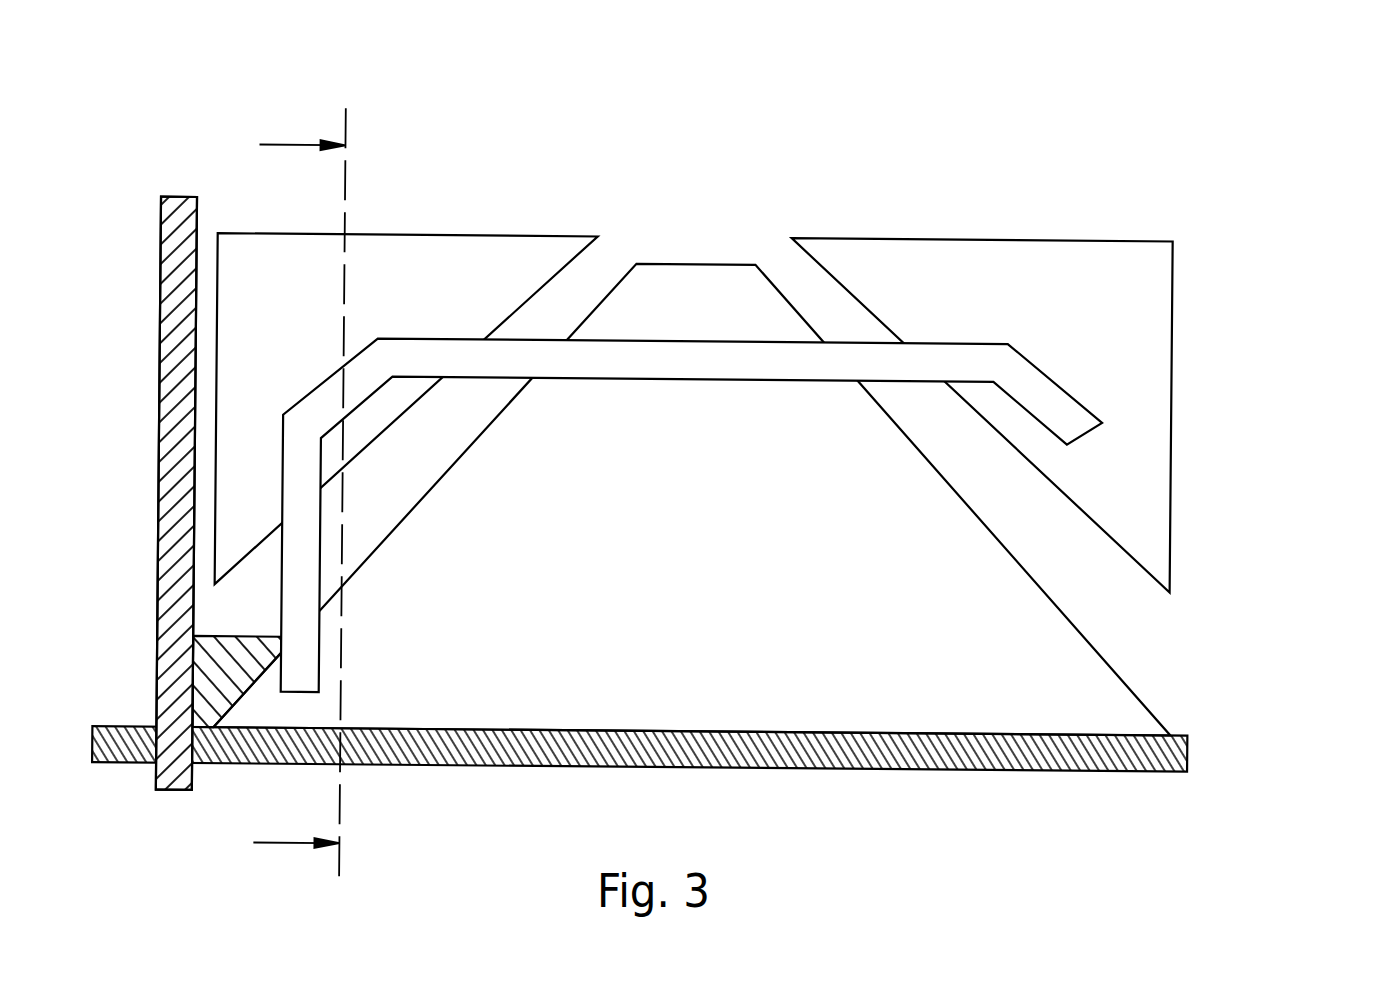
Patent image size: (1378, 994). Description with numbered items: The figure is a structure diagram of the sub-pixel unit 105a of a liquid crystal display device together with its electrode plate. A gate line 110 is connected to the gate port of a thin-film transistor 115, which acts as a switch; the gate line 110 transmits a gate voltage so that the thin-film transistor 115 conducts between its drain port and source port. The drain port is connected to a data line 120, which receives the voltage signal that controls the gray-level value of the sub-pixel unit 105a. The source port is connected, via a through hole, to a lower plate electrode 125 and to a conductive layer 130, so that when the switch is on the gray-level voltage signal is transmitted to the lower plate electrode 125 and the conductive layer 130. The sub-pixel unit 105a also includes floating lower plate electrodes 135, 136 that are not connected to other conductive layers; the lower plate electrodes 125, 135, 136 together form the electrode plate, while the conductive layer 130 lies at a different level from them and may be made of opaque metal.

The sub-pixel unit 105a is at (730, 473).
The gate line 110 is at (178, 197).
The thin-film transistor 115 is at (213, 636).
The data line 120 is at (1168, 764).
The lower plate electrode 125 is at (1132, 680).
The conductive layer 130 is at (1089, 401).
The floating lower plate electrode 135 is at (455, 231).
The floating lower plate electrode 136 is at (1130, 232).